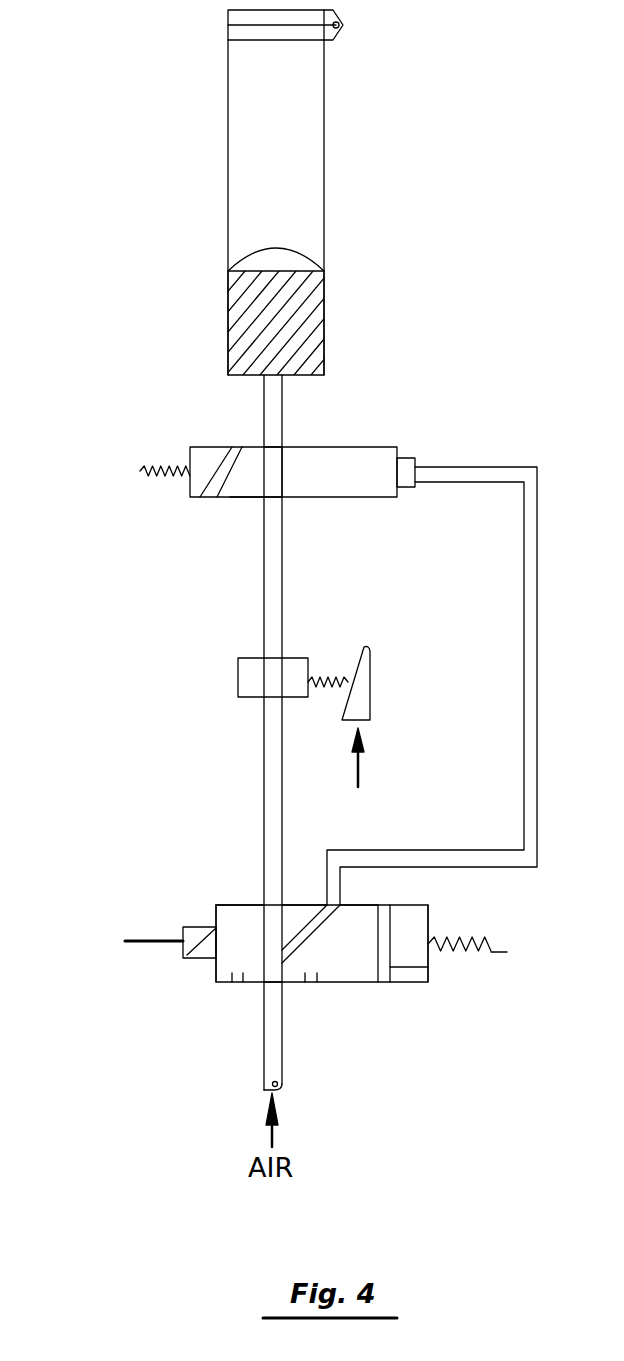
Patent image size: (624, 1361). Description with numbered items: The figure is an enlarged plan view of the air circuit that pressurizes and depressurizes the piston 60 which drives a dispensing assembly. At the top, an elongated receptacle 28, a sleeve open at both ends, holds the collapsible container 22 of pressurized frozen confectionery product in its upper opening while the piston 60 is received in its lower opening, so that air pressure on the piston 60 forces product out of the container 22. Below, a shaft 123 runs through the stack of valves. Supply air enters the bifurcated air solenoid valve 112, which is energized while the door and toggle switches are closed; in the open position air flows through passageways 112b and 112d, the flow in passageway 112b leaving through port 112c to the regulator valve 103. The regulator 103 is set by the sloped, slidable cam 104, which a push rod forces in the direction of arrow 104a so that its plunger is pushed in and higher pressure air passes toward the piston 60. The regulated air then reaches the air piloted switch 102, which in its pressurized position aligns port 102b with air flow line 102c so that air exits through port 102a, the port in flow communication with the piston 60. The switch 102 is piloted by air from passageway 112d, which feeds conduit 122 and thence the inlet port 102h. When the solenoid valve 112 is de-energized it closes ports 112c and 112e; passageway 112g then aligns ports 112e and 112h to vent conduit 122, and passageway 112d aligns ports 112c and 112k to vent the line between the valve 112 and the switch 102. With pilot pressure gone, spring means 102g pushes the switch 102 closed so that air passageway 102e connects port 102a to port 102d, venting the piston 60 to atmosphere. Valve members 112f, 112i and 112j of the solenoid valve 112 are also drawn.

The receptacle 28 is at (228, 104).
The collapsible container 22 is at (290, 152).
The piston 60 is at (317, 315).
The shaft 123 is at (277, 587).
The air piloted switch 102 is at (203, 441).
The port 102a is at (283, 443).
The port 102b is at (283, 497).
The air flow line 102c is at (283, 467).
The port 102d is at (245, 498).
The air passageway 102e is at (210, 478).
The spring means 102g is at (140, 472).
The inlet port 102h is at (418, 458).
The conduit 122 is at (537, 680).
The regulator valve 103 is at (247, 680).
The sloped cam 104 is at (367, 685).
The arrow 104a is at (358, 772).
The solenoid valve 112 is at (205, 977).
The passageway 112b is at (262, 937).
The port 112c is at (258, 903).
The passageway 112d is at (303, 905).
The port 112e is at (340, 912).
The piston 112f is at (392, 907).
The passageway 112g is at (428, 968).
The port 112h is at (305, 985).
The spring 112i is at (491, 945).
The outlet 112j is at (285, 985).
The port 112k is at (232, 985).